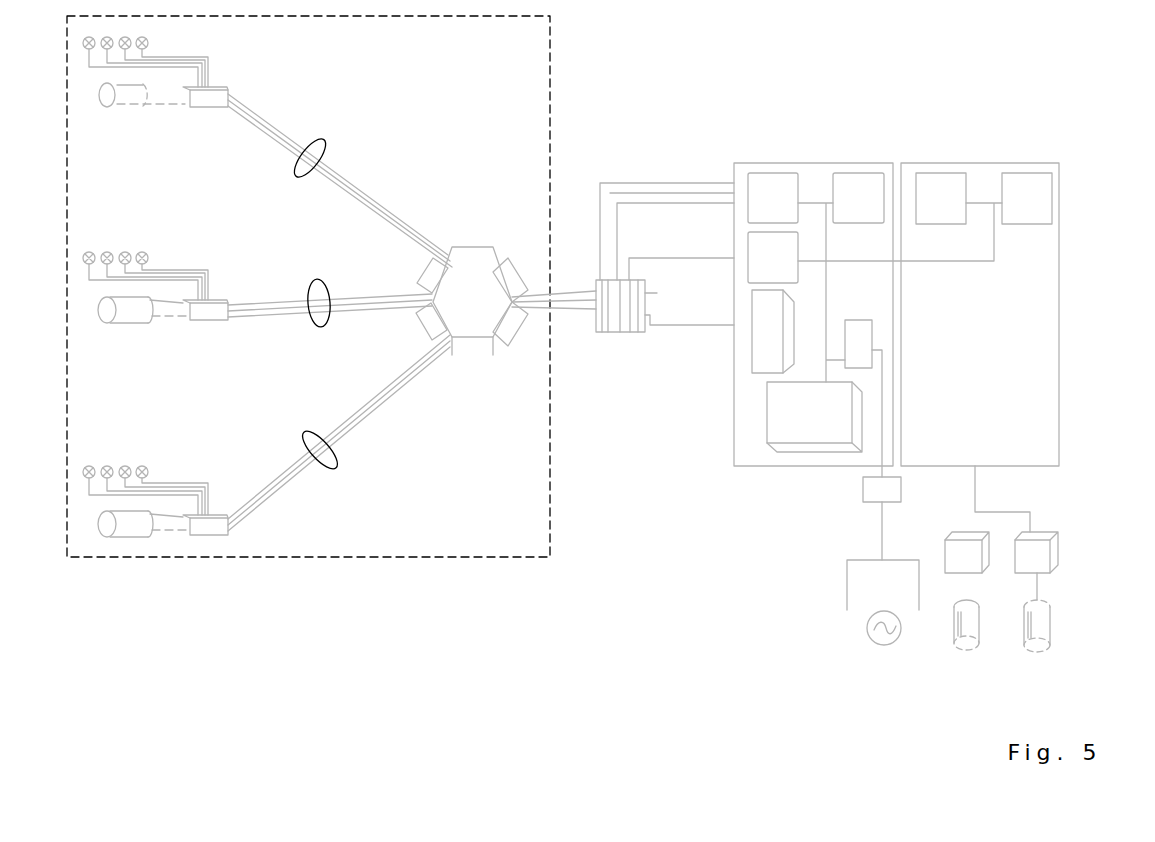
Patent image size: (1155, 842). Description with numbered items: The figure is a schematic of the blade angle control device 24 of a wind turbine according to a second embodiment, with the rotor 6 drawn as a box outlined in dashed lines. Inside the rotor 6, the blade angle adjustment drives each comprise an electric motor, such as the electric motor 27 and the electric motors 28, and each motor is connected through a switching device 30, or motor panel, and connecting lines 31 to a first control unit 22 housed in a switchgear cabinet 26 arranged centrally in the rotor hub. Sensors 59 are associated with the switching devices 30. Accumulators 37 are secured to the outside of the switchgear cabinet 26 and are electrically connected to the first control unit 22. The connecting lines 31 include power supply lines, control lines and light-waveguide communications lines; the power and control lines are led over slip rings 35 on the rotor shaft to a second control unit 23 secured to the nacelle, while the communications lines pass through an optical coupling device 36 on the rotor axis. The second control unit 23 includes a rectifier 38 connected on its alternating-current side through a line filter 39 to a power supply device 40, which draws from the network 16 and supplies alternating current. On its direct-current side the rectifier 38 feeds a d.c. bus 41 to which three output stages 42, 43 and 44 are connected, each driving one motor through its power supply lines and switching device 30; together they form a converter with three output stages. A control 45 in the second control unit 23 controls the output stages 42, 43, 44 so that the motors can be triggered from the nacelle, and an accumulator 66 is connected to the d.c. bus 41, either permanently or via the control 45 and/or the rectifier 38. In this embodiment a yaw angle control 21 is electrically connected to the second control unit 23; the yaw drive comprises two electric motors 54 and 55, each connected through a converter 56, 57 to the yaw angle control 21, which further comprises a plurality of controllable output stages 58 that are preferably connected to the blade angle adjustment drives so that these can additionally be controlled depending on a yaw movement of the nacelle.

The rotor 6 is at (553, 55).
The blade angle control device 24 is at (715, 89).
The sensors 59 is at (155, 43).
The electric motor 27 is at (128, 107).
The electric motor 28 is at (128, 322).
The switching device 30 is at (213, 109).
The connecting lines 31 is at (322, 141).
The first control unit 22 is at (469, 277).
The switchgear cabinet 26 is at (492, 267).
The accumulators 37 is at (423, 328).
The slip rings 35 is at (613, 333).
The optical coupling device 36 is at (661, 297).
The second control unit 23 is at (745, 472).
The output stage 43 is at (773, 178).
The output stage 44 is at (862, 180).
The output stage 42 is at (753, 241).
The d.c. bus 41 is at (826, 302).
The control 45 is at (755, 362).
The accumulator 66 is at (788, 447).
The rectifier 38 is at (875, 335).
The line filter 39 is at (866, 495).
The power supply device 40 is at (853, 586).
The network 16 is at (868, 645).
The yaw angle control 21 is at (1062, 393).
The controllable output stages 58 is at (943, 178).
The converter 56 is at (955, 535).
The converter 57 is at (1047, 533).
The electric motor 54 is at (960, 650).
The electric motor 55 is at (1050, 630).